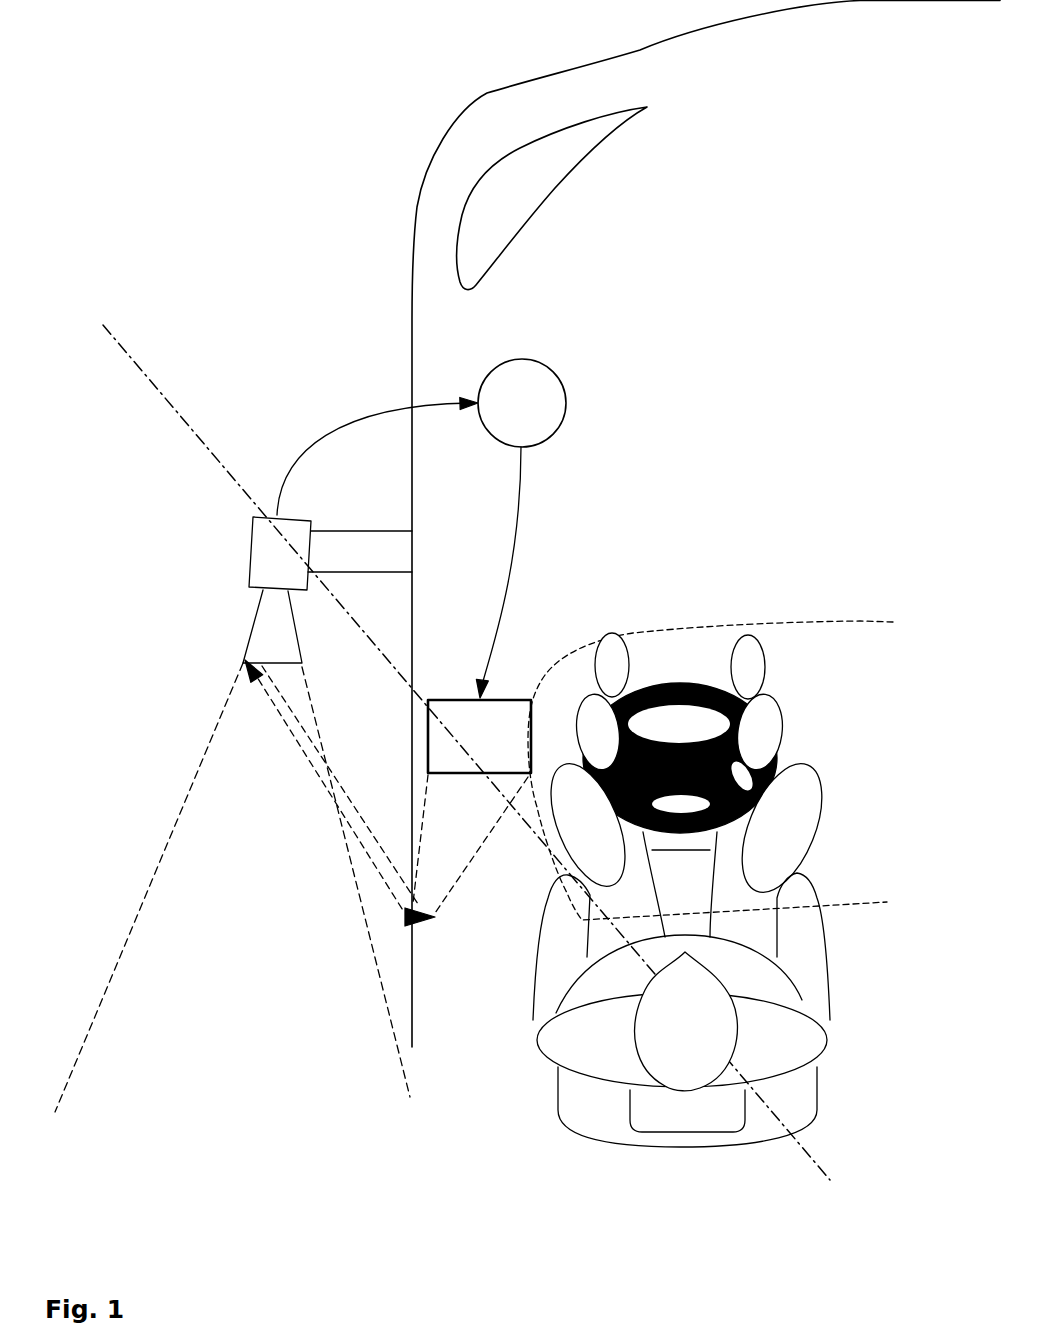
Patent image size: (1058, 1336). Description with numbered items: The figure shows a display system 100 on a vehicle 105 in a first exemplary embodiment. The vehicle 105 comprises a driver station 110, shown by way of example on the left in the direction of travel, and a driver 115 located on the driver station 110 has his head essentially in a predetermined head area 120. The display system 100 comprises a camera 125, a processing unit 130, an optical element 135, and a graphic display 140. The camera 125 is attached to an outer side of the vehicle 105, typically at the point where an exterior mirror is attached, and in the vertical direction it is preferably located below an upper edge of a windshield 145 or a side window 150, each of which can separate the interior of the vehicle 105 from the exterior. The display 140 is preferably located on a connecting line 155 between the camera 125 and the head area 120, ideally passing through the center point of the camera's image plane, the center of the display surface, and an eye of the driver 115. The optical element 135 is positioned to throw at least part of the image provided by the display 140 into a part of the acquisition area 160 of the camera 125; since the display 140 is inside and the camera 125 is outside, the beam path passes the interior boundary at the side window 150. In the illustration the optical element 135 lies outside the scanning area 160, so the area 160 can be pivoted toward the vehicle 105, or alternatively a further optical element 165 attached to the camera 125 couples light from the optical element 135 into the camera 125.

The display system 100 is at (245, 260).
The vehicle 105 is at (487, 93).
The driver station 110 is at (497, 1115).
The driver 115 is at (830, 1043).
The head area 120 is at (765, 1012).
The camera 125 is at (250, 543).
The processing unit 130 is at (565, 402).
The optical element 135 is at (413, 917).
The graphic display 140 is at (510, 697).
The windshield 145 is at (857, 622).
The side window 150 is at (413, 962).
The connecting line 155 is at (173, 410).
The acquisition area 160 is at (185, 860).
The further optical element 165 is at (245, 660).